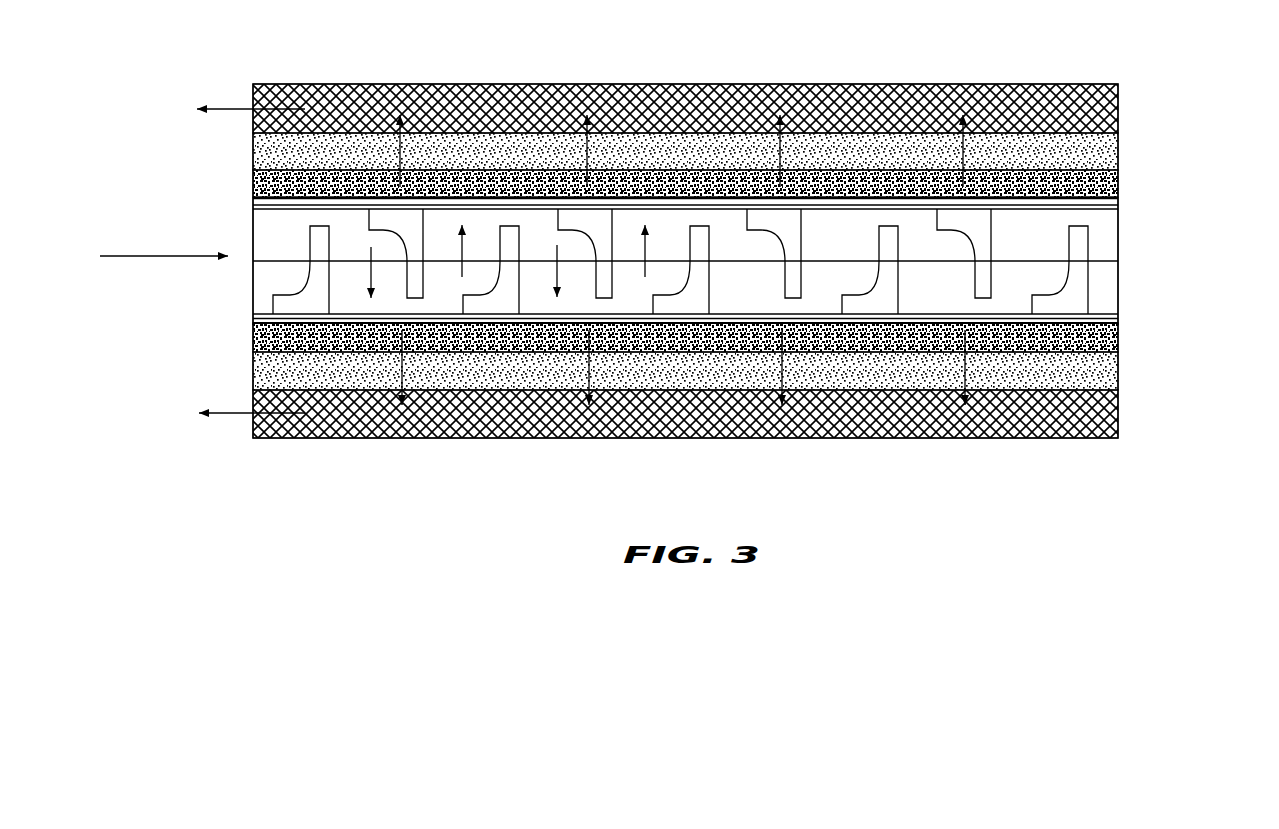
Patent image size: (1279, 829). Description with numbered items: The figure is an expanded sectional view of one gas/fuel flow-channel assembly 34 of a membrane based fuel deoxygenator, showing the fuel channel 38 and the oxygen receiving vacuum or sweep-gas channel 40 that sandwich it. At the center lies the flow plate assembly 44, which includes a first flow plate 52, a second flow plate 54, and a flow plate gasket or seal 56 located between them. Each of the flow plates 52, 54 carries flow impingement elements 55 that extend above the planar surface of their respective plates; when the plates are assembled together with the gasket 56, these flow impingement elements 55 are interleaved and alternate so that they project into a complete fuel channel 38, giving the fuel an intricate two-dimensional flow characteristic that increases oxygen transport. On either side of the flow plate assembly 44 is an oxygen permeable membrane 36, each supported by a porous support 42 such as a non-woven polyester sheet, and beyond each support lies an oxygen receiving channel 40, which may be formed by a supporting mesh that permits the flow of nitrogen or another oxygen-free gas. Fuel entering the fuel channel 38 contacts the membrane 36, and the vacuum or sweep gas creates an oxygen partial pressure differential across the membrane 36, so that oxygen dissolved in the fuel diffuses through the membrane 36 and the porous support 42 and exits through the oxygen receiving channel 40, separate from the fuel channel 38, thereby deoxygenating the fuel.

The gas/fuel flow-channel assembly 34 is at (1208, 102).
The oxygen receiving vacuum or sweep-gas channel 40 is at (135, 116).
The porous support 42 is at (1118, 152).
The oxygen permeable membrane 36 is at (1118, 200).
The flow plate assembly 44 is at (1198, 325).
The first flow plate 52 is at (1110, 234).
The flow plate gasket or seal 56 is at (1118, 262).
The second flow plate 54 is at (1118, 292).
The flow impingement elements 55 is at (898, 293).
The fuel channel 38 is at (83, 253).